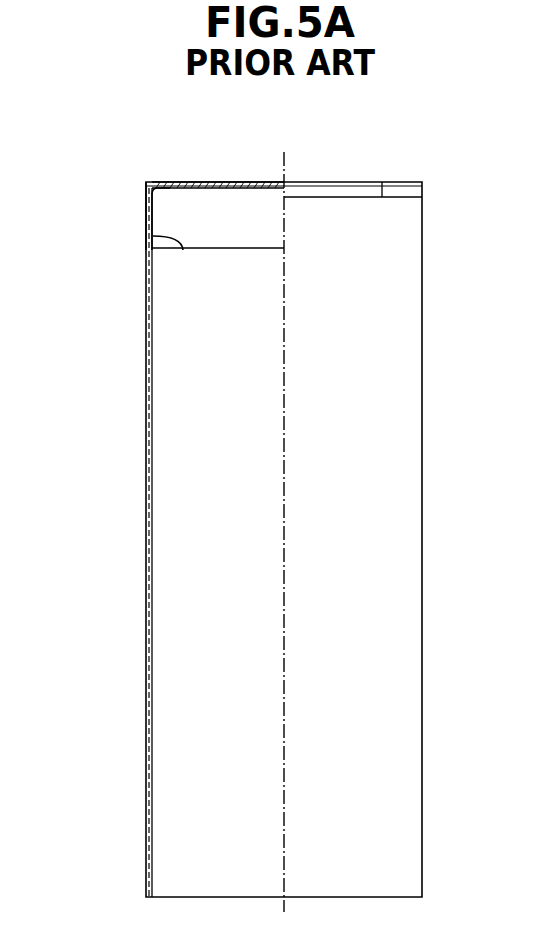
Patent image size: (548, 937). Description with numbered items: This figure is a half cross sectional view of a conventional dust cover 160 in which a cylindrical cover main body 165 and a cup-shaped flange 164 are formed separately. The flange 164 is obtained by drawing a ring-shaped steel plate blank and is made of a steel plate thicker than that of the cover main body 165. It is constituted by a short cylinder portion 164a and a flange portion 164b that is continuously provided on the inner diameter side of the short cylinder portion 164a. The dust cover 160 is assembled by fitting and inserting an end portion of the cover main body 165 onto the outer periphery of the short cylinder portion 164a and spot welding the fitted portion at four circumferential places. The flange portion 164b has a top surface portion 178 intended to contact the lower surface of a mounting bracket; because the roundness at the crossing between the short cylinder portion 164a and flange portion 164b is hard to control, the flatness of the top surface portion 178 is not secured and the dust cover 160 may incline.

The dust cover 160 is at (121, 320).
The flange 164 is at (164, 180).
The short cylinder portion 164a is at (183, 250).
The flange portion 164b is at (172, 181).
The cover main body 165 is at (146, 405).
The top surface portion 178 is at (185, 181).